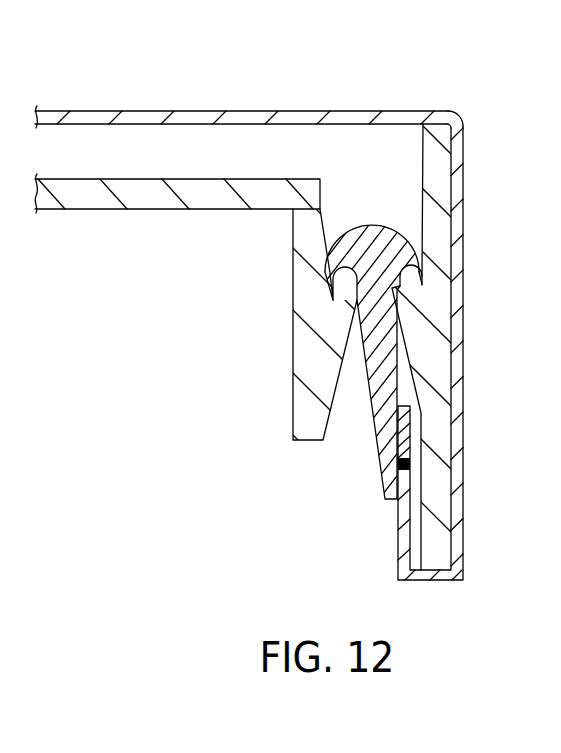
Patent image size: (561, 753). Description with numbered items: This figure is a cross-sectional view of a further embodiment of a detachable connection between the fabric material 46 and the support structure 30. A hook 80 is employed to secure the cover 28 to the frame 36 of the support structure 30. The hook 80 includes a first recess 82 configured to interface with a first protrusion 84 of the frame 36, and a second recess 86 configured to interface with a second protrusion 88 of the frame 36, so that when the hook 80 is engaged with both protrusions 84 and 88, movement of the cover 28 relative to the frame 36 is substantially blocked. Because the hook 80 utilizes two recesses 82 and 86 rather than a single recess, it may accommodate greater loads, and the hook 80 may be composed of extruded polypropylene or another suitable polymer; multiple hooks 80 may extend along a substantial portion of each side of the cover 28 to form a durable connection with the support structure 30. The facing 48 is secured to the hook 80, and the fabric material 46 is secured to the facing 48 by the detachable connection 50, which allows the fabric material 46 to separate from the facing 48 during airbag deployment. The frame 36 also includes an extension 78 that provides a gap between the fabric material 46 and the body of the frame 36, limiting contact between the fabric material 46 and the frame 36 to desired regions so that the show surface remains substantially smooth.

The cover 28 is at (476, 89).
The support structure 30 is at (220, 265).
The frame 36 is at (157, 203).
The fabric material 46 is at (466, 498).
The facing 48 is at (398, 463).
The detachable connection 50 is at (411, 465).
The extension 78 is at (441, 110).
The hook 80 is at (372, 232).
The first recess 82 is at (398, 262).
The first protrusion 84 is at (415, 283).
The second recess 86 is at (338, 262).
The second protrusion 88 is at (338, 284).